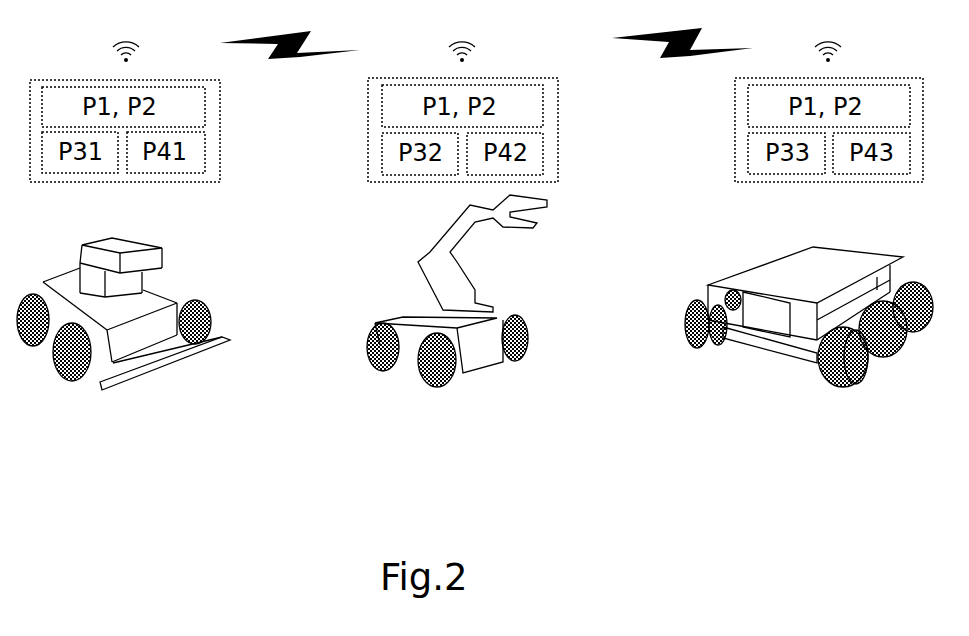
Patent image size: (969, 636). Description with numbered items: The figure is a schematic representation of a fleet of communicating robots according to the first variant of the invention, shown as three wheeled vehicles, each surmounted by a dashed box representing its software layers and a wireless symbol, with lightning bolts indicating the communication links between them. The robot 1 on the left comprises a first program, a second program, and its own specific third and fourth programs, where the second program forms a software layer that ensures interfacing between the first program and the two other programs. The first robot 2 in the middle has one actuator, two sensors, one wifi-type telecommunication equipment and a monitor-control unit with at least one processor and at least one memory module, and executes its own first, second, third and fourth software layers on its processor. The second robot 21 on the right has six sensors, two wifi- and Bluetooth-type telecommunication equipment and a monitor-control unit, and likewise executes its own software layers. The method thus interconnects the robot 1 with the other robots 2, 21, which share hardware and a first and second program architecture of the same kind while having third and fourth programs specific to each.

The robot 1 is at (167, 378).
The first robot 2 is at (513, 373).
The second robot 21 is at (797, 372).